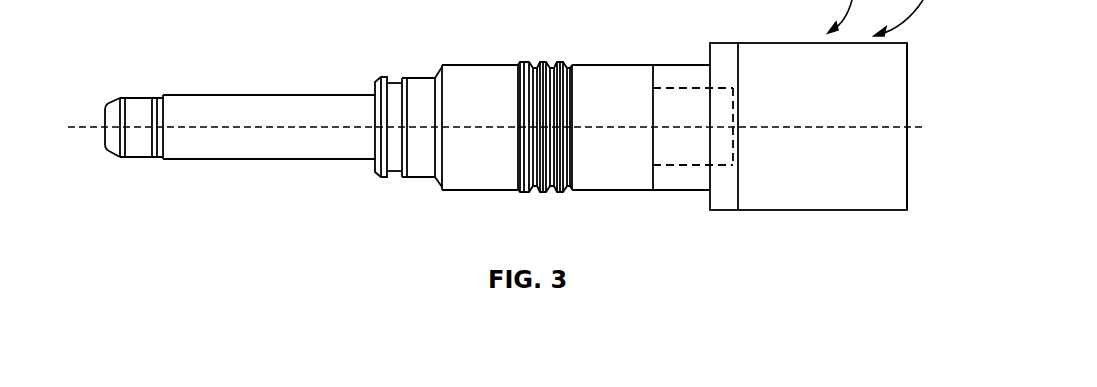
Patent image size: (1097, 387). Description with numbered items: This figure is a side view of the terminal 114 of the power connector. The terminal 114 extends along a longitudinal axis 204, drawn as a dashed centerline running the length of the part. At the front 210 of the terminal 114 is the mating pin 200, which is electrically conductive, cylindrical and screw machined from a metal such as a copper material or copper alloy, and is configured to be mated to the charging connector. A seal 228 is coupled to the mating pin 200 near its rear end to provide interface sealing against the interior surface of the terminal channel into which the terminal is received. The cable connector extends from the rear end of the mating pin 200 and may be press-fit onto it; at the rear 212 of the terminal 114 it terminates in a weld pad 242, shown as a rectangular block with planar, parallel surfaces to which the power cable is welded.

The terminal 114 is at (340, 53).
The mating pin 200 is at (332, 150).
The longitudinal axis 204 is at (196, 128).
The front 210 is at (104, 140).
The rear 212 is at (908, 118).
The seal 228 is at (541, 190).
The weld pad 242 is at (780, 68).